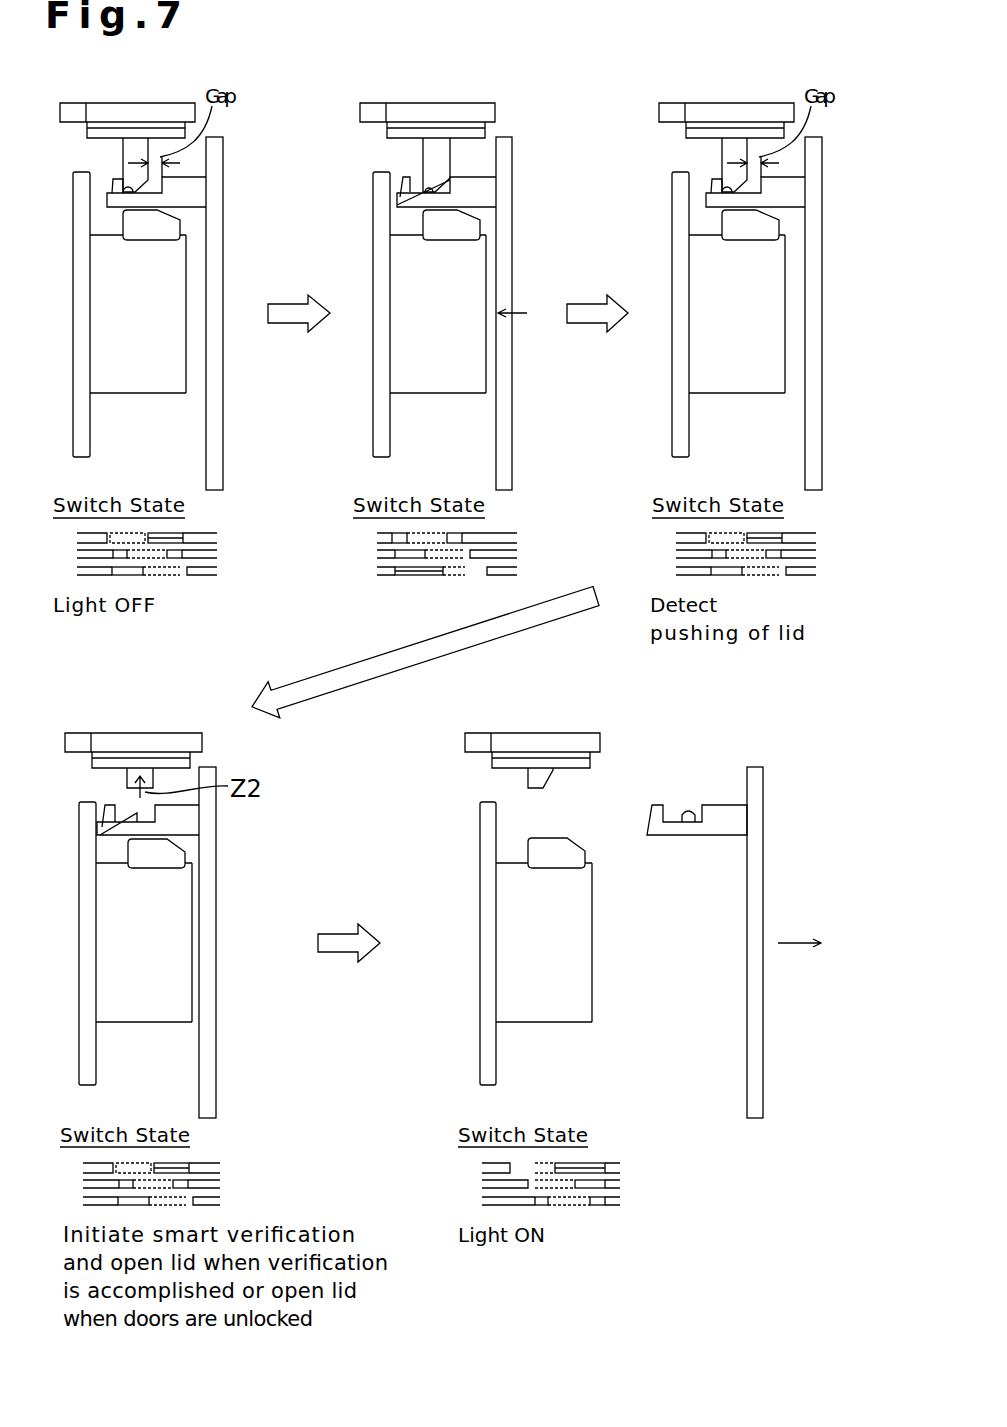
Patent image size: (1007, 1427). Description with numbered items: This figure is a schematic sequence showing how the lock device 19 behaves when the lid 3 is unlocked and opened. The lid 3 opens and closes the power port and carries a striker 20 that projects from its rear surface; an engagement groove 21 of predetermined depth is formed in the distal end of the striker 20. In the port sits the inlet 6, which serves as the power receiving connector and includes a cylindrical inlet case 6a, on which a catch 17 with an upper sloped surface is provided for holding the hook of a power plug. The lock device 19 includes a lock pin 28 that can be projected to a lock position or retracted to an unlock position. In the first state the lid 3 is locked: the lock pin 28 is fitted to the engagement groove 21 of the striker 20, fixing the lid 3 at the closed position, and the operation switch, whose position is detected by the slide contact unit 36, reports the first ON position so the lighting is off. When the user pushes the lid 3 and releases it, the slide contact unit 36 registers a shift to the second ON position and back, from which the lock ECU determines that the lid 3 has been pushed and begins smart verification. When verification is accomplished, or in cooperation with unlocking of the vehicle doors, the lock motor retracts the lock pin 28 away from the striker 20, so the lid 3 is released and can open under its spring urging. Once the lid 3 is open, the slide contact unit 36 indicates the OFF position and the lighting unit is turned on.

The lid 3 is at (224, 445).
The inlet 6 is at (128, 397).
The inlet case 6a is at (167, 382).
The catch 17 is at (165, 223).
The lock device 19 is at (137, 102).
The striker 20 is at (113, 185).
The engagement groove 21 is at (122, 184).
The lock pin 28 is at (123, 155).
The slide contact unit 36 is at (240, 539).